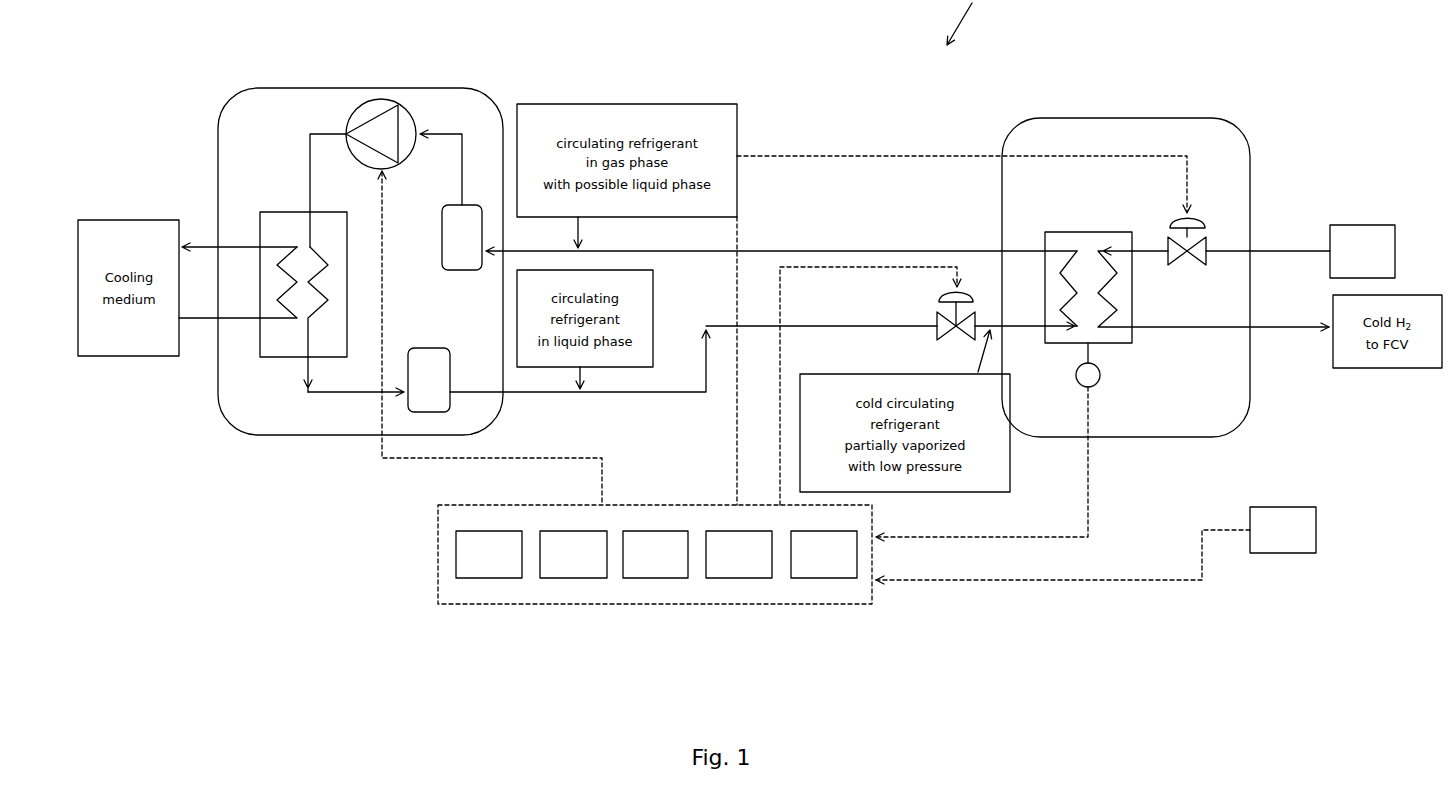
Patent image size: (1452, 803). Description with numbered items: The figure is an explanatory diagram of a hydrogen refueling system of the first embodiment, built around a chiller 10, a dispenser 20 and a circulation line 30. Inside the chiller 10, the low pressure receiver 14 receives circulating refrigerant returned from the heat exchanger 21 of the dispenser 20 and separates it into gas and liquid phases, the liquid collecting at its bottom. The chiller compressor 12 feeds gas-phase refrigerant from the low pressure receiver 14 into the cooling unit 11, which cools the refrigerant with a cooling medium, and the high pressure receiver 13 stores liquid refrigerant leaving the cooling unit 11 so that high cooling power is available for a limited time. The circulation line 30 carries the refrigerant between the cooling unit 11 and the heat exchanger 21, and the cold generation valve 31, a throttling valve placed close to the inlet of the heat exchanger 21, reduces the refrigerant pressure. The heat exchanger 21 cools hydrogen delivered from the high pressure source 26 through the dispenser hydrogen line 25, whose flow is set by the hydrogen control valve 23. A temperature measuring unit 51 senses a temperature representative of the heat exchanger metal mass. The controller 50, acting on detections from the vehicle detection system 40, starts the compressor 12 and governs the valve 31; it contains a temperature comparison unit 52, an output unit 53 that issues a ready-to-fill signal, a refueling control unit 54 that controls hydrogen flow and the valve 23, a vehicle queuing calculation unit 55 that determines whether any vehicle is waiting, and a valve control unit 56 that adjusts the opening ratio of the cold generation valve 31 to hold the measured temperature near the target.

The chiller 10 is at (483, 81).
The cooling unit 11 is at (270, 212).
The chiller compressor 12 is at (381, 99).
The high pressure receiver 13 is at (431, 348).
The low pressure receiver 14 is at (442, 236).
The dispenser 20 is at (1234, 111).
The heat exchanger 21 is at (1068, 232).
The H2 control valve 23 is at (1183, 216).
The dispenser H2 line 25 is at (1282, 252).
The H2 source 26 is at (1363, 224).
The circulation line 30 is at (661, 252).
The cold generation valve 31 is at (940, 296).
The vehicle detection system 40 is at (1096, 545).
The controller 50 is at (625, 411).
The temperature measuring unit 51 is at (1093, 381).
The temperature comparison unit 52 is at (489, 554).
The output unit 53 is at (573, 554).
The refueling control unit 54 is at (655, 554).
The vehicle queuing calculation unit 55 is at (739, 554).
The valve control unit 56 is at (824, 554).